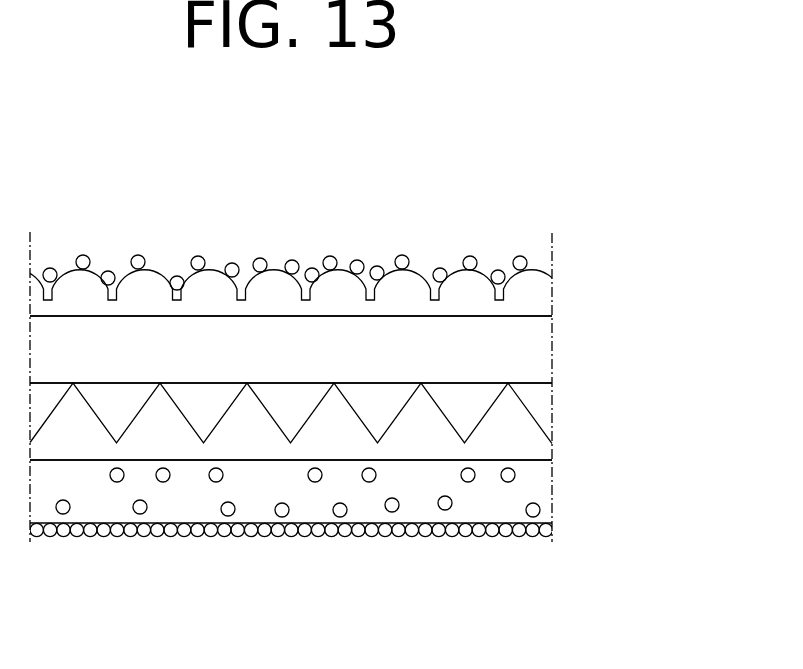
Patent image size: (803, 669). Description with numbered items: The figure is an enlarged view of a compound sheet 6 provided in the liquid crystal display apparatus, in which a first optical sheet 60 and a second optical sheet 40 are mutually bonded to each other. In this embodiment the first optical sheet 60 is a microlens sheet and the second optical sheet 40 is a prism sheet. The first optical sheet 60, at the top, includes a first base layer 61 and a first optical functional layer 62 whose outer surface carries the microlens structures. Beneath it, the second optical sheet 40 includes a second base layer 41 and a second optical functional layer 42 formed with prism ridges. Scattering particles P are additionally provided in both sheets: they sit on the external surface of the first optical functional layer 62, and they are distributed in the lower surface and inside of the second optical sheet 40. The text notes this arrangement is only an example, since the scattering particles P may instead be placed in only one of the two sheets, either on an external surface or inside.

The optical sheet / display unit 6 is at (304, 152).
The first optical sheet 60 is at (625, 308).
The first optical functional layer 62 is at (545, 308).
The first base layer 61 is at (545, 354).
The second optical sheet 40 is at (625, 452).
The second optical functional layer 42 is at (545, 451).
The second base layer 41 is at (545, 494).
The scattering particles P is at (398, 254).